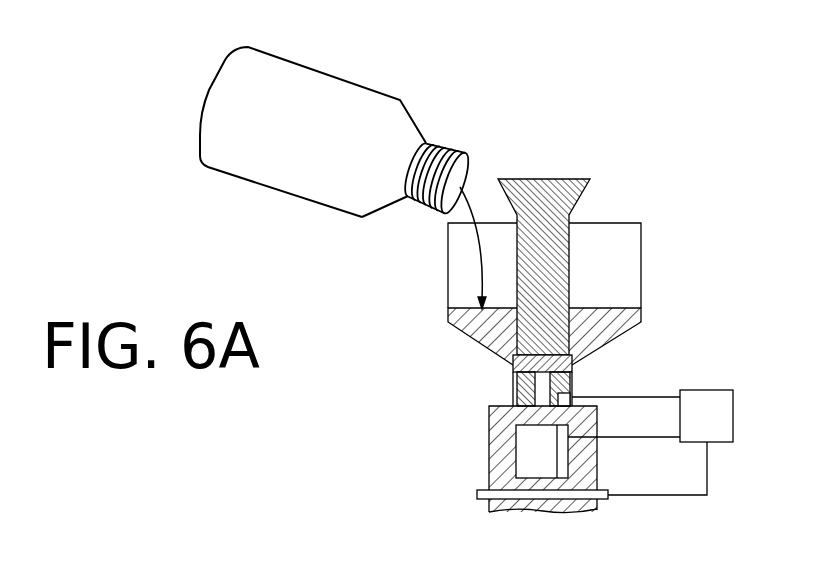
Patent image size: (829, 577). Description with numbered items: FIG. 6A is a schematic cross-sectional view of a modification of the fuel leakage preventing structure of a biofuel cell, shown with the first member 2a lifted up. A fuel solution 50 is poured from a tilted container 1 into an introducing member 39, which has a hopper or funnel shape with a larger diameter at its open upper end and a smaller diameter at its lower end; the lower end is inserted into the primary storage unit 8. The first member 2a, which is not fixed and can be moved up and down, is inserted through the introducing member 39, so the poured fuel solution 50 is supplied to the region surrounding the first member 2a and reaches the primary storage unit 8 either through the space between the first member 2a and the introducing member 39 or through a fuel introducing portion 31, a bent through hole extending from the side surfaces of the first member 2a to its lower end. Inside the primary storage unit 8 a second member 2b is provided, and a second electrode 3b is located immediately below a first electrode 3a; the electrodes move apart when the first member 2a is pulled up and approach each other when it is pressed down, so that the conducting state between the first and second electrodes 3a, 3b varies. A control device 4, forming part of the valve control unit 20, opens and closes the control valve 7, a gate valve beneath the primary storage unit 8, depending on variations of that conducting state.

The container 1 is at (268, 182).
The first member 2a is at (584, 194).
The second member 2b is at (516, 448).
The first electrode 3a is at (573, 382).
The second electrode 3b is at (567, 452).
The control device 4 is at (733, 405).
The control valve 7 is at (477, 495).
The primary storage unit 8 is at (489, 411).
The valve control unit 20 is at (690, 207).
The fuel introducing portion 31 is at (512, 370).
The introducing member 39 is at (642, 263).
The fuel solution 50 is at (603, 308).